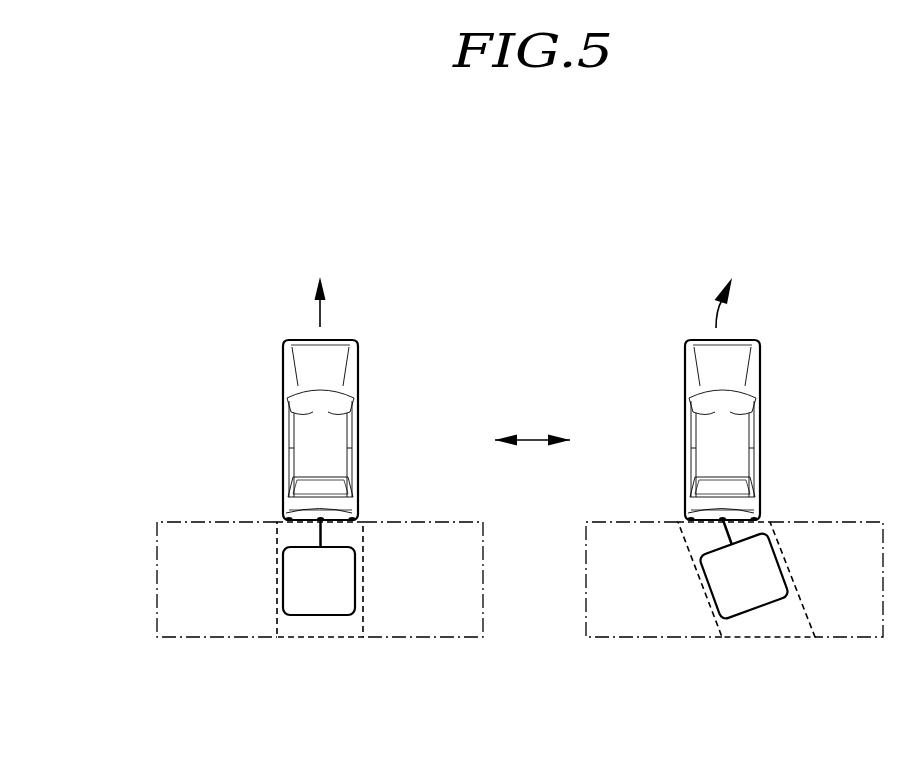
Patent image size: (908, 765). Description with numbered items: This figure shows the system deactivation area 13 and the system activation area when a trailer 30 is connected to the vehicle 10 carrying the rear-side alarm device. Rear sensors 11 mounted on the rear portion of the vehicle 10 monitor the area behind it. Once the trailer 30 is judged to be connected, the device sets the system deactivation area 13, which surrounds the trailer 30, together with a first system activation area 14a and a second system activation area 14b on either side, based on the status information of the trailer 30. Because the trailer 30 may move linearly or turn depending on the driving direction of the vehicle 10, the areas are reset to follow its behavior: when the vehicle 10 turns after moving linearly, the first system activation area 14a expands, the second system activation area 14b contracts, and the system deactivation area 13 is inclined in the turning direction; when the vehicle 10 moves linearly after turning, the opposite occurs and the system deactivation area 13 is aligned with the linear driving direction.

The vehicle 10 is at (358, 388).
The rear sensors 11 is at (351, 517).
The system deactivation area 13 is at (340, 638).
The first system activation area 14a is at (212, 638).
The second system activation area 14b is at (423, 638).
The trailer 30 is at (307, 616).